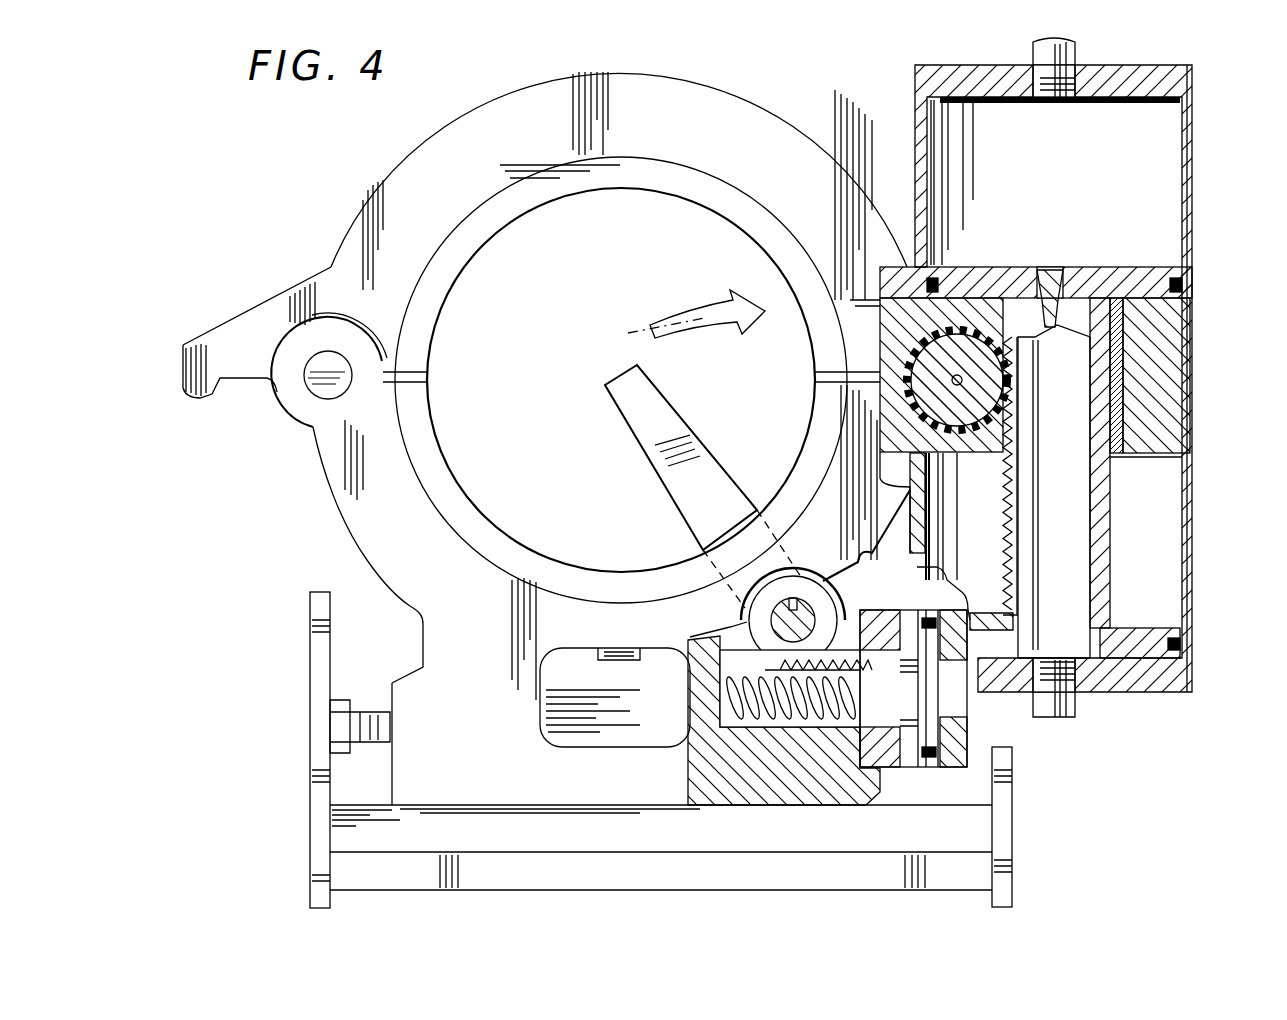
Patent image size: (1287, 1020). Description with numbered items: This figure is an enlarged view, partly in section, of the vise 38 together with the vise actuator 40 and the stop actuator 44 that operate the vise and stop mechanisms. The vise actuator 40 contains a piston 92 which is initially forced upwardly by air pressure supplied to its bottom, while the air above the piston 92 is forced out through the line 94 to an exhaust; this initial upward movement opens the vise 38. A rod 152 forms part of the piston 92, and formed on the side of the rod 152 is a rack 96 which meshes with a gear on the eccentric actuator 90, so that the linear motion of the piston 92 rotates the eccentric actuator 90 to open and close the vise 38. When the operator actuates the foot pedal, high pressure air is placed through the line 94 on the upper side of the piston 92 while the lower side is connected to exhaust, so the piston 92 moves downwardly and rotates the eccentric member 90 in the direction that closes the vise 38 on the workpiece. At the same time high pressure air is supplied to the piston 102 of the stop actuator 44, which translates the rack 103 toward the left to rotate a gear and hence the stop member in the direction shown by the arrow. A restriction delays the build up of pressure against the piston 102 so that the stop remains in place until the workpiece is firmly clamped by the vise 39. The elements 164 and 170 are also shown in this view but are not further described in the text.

The vise 38 is at (738, 104).
The vise 39 is at (445, 468).
The vise actuator 40 is at (1192, 350).
The stop actuator 44 is at (980, 733).
The eccentric actuator 90 is at (925, 383).
The piston 92 is at (1002, 268).
The line 94 is at (1033, 46).
The rack 96 is at (1048, 562).
The piston 102 is at (906, 767).
The rack 103 is at (890, 627).
The rod 152 is at (1108, 483).
The piston body 164 is at (1080, 527).
The indicator needle 170 is at (735, 600).